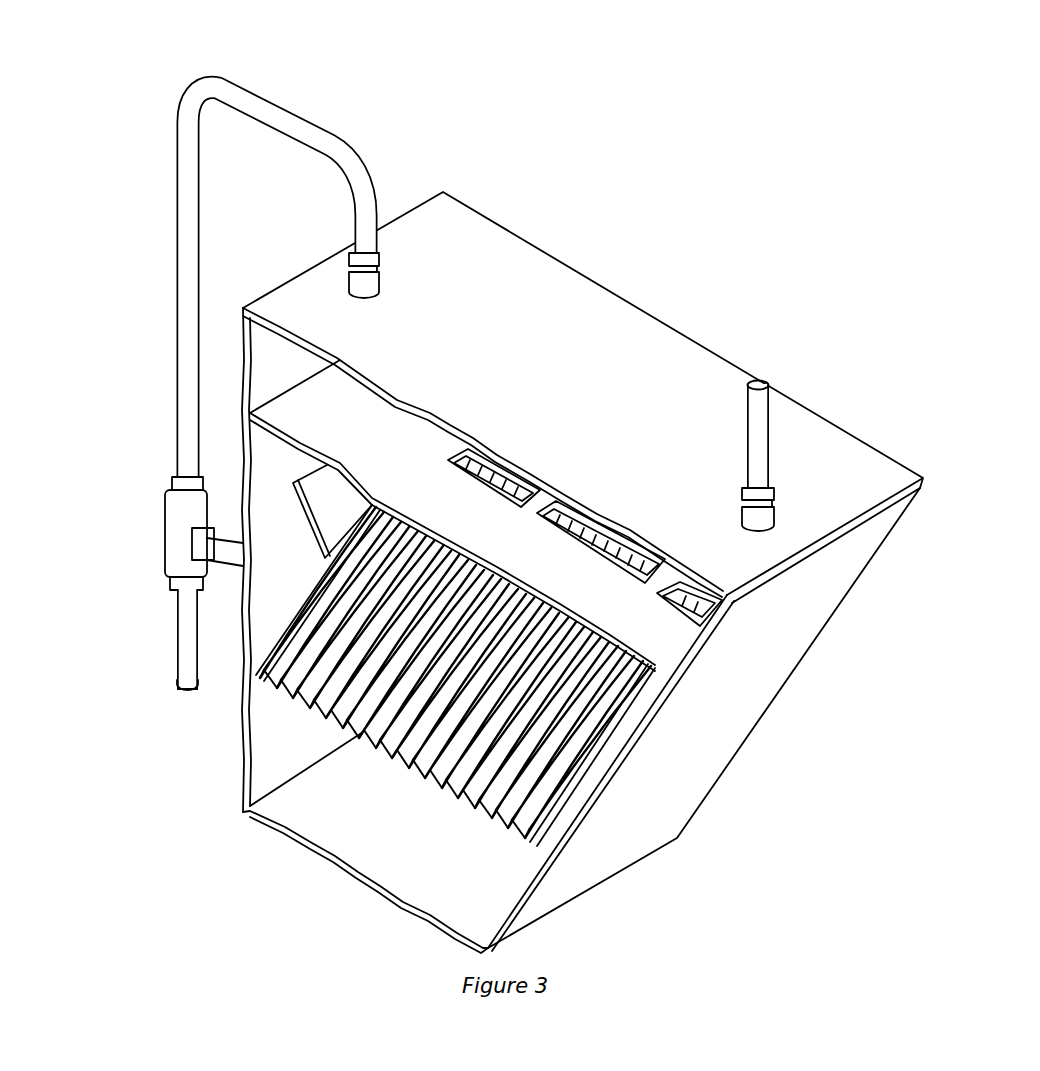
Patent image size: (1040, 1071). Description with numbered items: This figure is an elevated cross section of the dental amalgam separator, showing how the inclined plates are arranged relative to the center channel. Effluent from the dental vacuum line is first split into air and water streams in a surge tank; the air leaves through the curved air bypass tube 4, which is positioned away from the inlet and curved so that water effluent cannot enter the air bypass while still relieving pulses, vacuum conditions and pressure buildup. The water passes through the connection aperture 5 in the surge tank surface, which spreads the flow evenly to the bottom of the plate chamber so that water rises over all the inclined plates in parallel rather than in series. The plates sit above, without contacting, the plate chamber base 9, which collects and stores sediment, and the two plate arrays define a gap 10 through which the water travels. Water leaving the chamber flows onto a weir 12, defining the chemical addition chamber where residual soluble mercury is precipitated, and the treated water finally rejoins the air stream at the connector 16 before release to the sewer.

The air bypass tube 4 is at (363, 175).
The connection aperture 5 is at (663, 558).
The plate chamber base 9 is at (378, 888).
The gap 10 is at (548, 785).
The weir 12 is at (300, 523).
The connector 16 is at (175, 542).